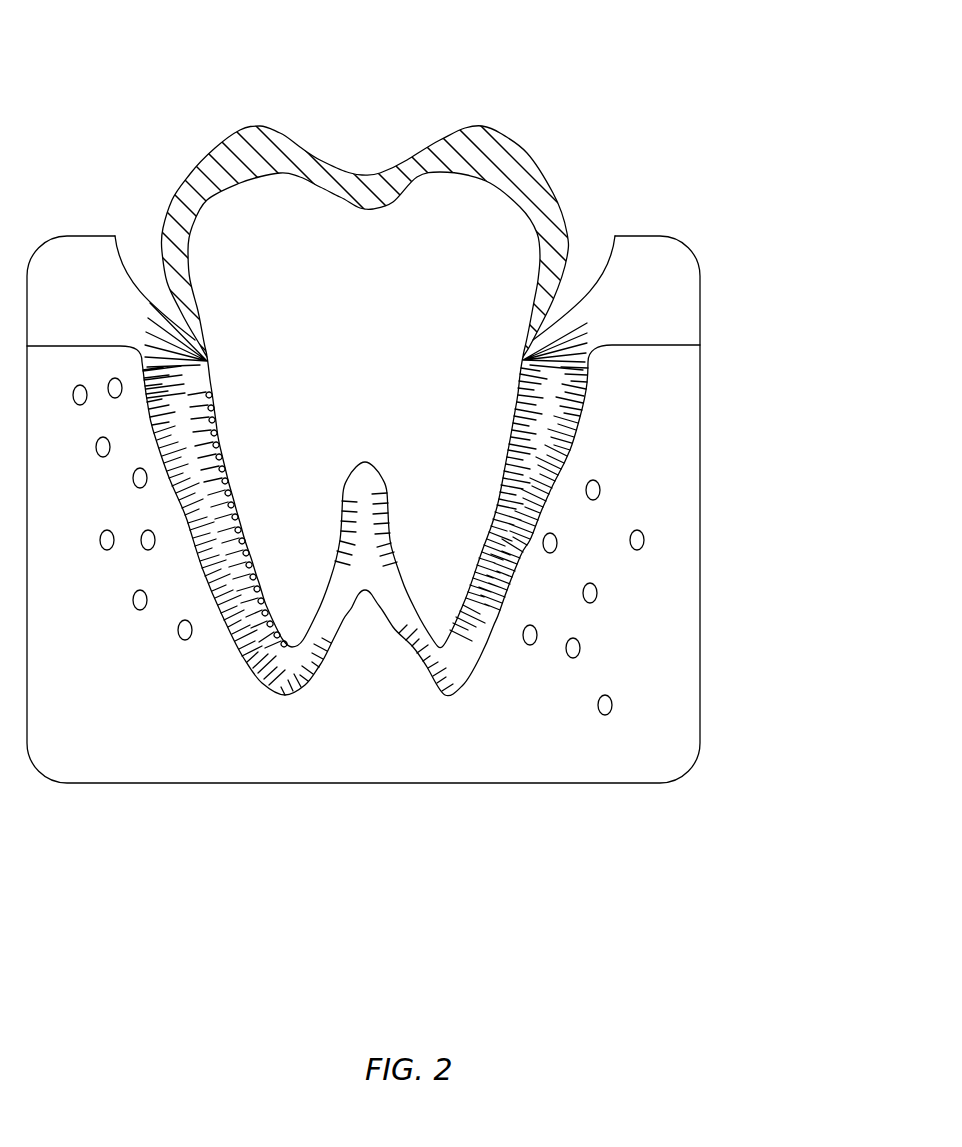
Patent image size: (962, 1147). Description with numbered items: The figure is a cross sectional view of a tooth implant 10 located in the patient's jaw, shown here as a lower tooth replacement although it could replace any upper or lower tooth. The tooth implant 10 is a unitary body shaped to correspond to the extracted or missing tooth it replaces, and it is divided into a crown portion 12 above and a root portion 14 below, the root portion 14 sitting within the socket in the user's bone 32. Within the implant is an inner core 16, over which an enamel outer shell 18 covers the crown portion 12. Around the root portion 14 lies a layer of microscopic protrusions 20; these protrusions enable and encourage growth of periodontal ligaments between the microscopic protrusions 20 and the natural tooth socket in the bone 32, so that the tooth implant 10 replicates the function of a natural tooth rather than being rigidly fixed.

The tooth implant 10 is at (412, 86).
The crown portion 12 is at (566, 183).
The root portion 14 is at (512, 475).
The inner core 16 is at (448, 292).
The enamel outer shell 18 is at (223, 157).
The layer of microscopic protrusions 20 is at (292, 663).
The bone 32 is at (660, 703).